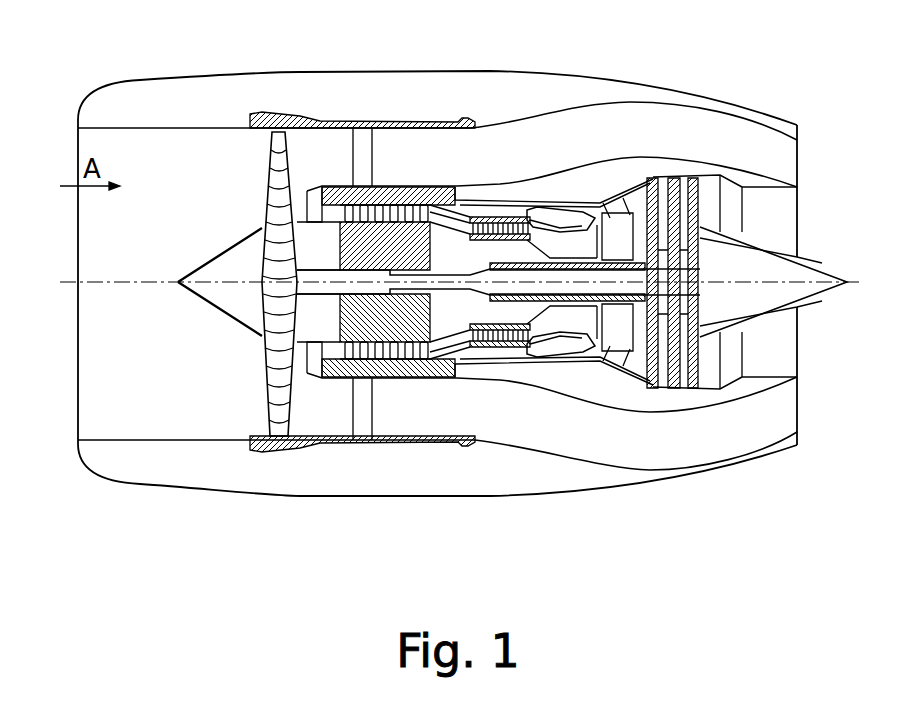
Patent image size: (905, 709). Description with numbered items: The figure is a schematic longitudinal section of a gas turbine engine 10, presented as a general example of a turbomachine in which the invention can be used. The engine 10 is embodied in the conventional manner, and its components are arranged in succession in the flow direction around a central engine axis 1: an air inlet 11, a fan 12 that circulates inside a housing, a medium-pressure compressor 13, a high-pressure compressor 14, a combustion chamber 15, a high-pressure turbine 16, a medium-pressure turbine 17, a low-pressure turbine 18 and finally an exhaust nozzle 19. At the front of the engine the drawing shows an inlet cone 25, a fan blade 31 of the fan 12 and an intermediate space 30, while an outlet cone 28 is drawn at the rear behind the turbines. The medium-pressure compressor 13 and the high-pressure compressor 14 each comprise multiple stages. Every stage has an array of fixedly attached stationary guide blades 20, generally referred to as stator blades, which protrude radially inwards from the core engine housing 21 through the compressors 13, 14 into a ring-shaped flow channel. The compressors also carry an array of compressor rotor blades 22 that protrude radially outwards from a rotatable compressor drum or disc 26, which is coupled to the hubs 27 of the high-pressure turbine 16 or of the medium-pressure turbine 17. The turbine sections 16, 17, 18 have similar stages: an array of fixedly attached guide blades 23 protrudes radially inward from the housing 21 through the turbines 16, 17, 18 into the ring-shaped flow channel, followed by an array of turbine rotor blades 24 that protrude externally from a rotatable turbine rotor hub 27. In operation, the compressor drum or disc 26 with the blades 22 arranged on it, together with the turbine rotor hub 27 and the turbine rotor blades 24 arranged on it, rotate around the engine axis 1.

The central engine axis 1 is at (128, 287).
The gas turbine engine 10 is at (554, 152).
The air inlet 11 is at (200, 156).
The fan 12 is at (297, 133).
The medium-pressure compressor 13 is at (400, 222).
The high-pressure compressor 14 is at (505, 215).
The combustion chamber 15 is at (557, 222).
The high-pressure turbine 16 is at (598, 215).
The medium-pressure turbine 17 is at (632, 215).
The low-pressure turbine 18 is at (703, 193).
The exhaust nozzle 19 is at (737, 227).
The guide blades 20 is at (358, 380).
The core engine housing 21 is at (395, 387).
The compressor rotor blades 22 is at (410, 380).
The guide blades 23 is at (643, 377).
The turbine rotor blades 24 is at (682, 352).
The inlet cone 25 is at (240, 297).
The compressor drum or disc 26 is at (447, 380).
The turbine rotor hub 27 is at (660, 330).
The outlet cone 28 is at (808, 275).
The intermediate space 30 is at (237, 270).
The fan blade 31 is at (277, 440).